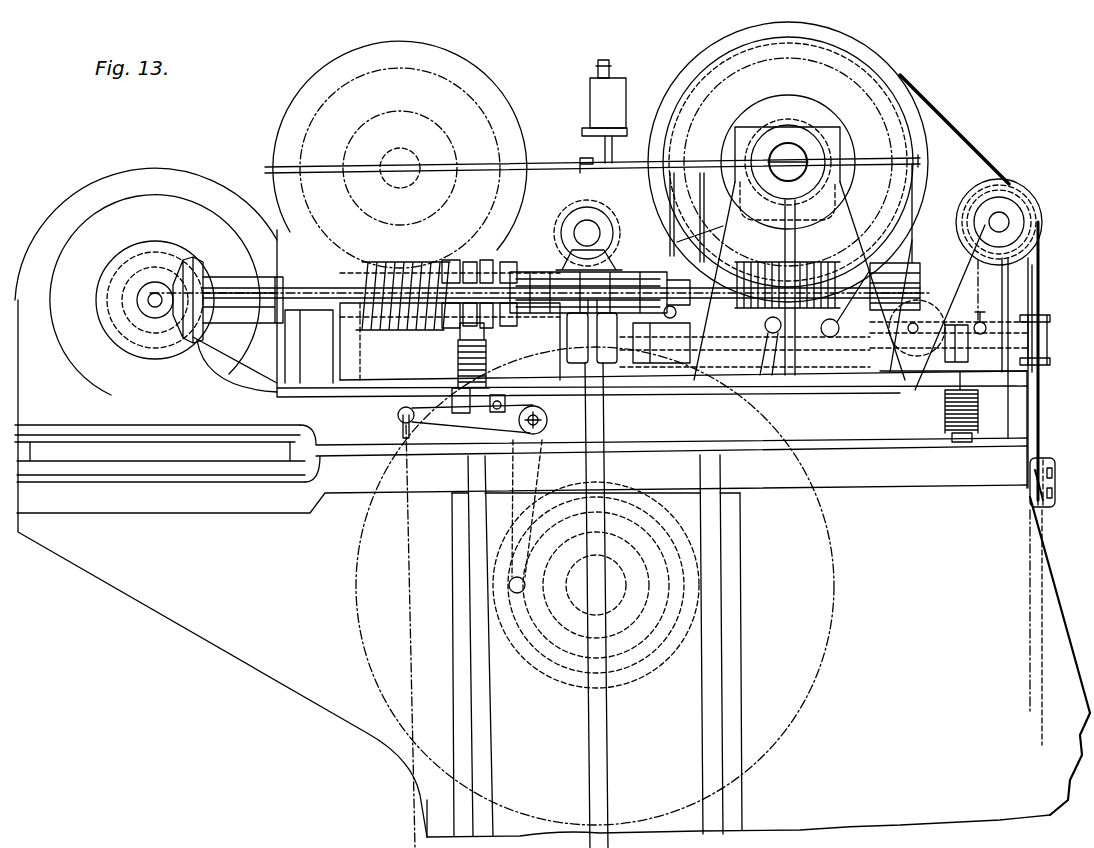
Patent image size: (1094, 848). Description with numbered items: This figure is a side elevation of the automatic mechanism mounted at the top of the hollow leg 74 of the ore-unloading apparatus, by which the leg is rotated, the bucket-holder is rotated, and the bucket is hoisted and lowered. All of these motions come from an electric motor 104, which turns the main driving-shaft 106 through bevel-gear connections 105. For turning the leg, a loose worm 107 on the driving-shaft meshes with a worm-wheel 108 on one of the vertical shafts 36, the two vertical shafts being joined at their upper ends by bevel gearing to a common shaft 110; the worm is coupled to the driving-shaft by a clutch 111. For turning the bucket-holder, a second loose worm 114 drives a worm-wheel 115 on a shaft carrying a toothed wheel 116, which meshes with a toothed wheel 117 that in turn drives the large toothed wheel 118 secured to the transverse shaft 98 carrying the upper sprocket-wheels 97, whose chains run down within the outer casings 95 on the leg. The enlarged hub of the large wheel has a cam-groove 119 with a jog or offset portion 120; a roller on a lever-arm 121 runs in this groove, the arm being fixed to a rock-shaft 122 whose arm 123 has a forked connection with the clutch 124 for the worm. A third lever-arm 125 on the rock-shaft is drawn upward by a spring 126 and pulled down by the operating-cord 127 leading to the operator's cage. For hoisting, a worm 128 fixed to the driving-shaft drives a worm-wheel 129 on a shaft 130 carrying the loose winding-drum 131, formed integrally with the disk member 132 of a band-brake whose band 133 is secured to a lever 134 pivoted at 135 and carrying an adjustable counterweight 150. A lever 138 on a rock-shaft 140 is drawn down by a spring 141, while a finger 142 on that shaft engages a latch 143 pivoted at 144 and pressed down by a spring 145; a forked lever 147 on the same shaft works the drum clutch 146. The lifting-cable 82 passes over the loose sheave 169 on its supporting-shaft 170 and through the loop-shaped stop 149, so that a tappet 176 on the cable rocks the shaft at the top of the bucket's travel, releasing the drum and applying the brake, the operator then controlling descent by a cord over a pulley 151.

The vertical shaft 36 is at (608, 760).
The leg 74 is at (433, 818).
The lifting-cable 82 is at (1040, 432).
The outer casing 95 is at (614, 796).
The sprocket-wheel 97 is at (630, 673).
The shaft 98 is at (583, 610).
The electric motor 104 is at (146, 281).
The bevel-gear connections 105 is at (150, 330).
The main driving-shaft 106 is at (228, 268).
The loose worm 107 is at (620, 250).
The worm-wheel 108 is at (672, 272).
The common shaft 110 is at (566, 220).
The clutch 111 is at (700, 228).
The loose worm 114 is at (479, 282).
The worm-wheel 115 is at (483, 110).
The toothed wheel 116 is at (400, 168).
The toothed wheel 117 is at (418, 247).
The large toothed wheel 118 is at (359, 545).
The cam-groove 119 is at (548, 623).
The jog or offset portion 120 is at (509, 589).
The lever-arm 121 is at (523, 473).
The rock-shaft 122 is at (598, 420).
The arm 123 is at (470, 353).
The clutch 124 is at (562, 262).
The lever-arm 125 is at (472, 421).
The spring 126 is at (455, 364).
The operating-cord 127 is at (410, 583).
The worm 128 is at (789, 272).
The worm-wheel 129 is at (872, 281).
The shaft 130 is at (788, 162).
The winding-drum 131 is at (873, 65).
The disk member 132 is at (917, 91).
The band 133 is at (668, 222).
The lever 134 is at (850, 345).
The pivot 135 is at (770, 333).
The lever 138 is at (944, 410).
The rock-shaft 140 is at (710, 347).
The spring 141 is at (945, 426).
The finger 142 is at (606, 198).
The latch 143 is at (625, 120).
The latch pivot 144 is at (588, 158).
The spring 145 is at (590, 132).
The clutch 146 is at (830, 110).
The forked lever 147 is at (833, 217).
The loop-shaped stop 149 is at (1047, 338).
The counterweight 150 is at (936, 306).
The pulley 151 is at (1038, 242).
The loose sheave 169 is at (1042, 204).
The supporting-shaft 170 is at (1000, 220).
The tappet 176 is at (1030, 475).